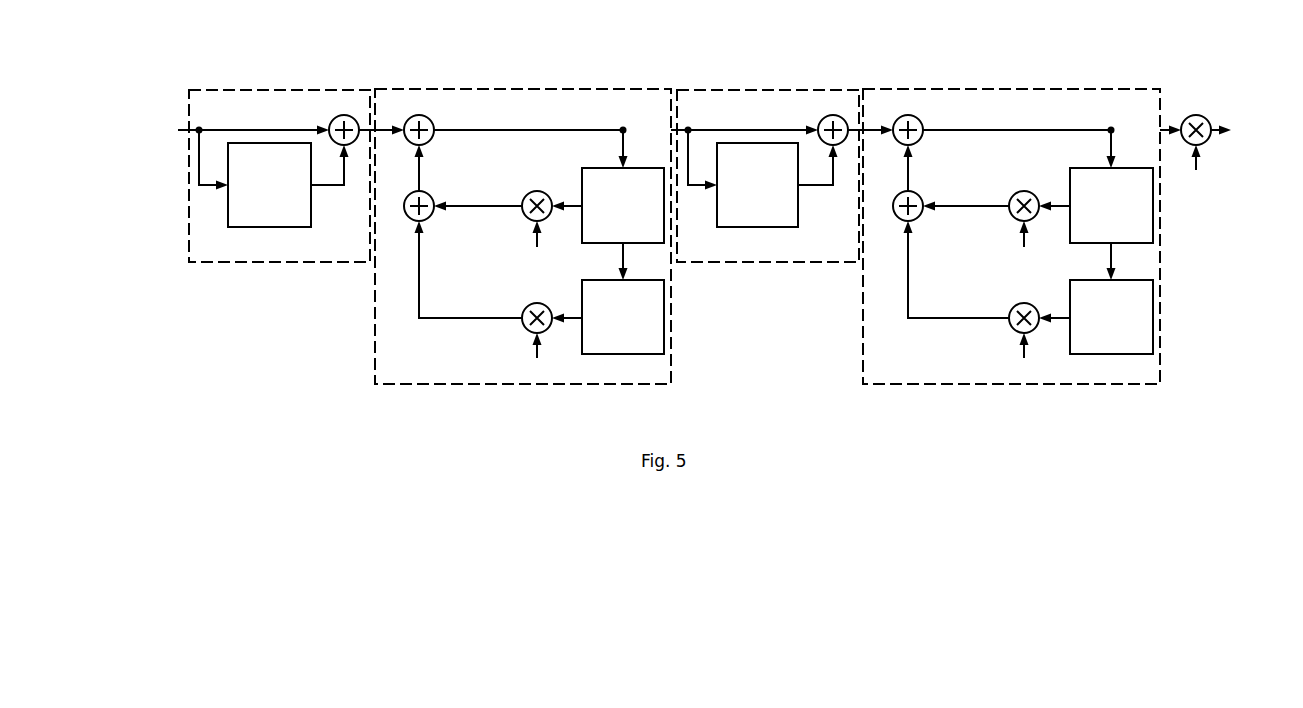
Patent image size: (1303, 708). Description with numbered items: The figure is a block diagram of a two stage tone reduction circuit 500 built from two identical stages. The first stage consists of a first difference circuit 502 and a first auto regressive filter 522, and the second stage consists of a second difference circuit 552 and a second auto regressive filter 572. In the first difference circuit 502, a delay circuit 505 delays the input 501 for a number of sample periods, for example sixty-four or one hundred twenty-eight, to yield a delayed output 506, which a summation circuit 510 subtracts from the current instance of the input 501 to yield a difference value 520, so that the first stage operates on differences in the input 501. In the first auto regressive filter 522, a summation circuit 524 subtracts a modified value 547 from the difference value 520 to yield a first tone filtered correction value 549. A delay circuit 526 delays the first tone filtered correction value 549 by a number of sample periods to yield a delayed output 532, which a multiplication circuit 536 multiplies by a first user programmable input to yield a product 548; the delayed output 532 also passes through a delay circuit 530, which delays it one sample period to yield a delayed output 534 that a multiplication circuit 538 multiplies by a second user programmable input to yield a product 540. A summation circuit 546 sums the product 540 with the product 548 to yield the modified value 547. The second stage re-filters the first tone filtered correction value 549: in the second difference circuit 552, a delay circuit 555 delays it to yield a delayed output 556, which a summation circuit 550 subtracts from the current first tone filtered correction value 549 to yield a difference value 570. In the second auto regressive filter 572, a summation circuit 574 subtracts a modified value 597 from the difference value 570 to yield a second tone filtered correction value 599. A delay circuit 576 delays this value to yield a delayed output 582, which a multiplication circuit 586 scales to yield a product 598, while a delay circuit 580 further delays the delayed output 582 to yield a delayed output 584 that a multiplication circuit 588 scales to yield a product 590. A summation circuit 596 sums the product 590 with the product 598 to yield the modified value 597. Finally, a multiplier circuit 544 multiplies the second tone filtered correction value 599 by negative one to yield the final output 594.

The two stage tone reduction circuit 500 is at (356, 59).
The input 501 is at (153, 120).
The first difference circuit 502 is at (230, 252).
The delay circuit 505 is at (286, 221).
The delayed output 506 is at (332, 187).
The summation circuit 510 is at (330, 121).
The difference value 520 is at (387, 125).
The first auto regressive filter 522 is at (418, 374).
The summation circuit 524 is at (431, 118).
The delay circuit 526 is at (639, 243).
The delay circuit 530 is at (639, 354).
The delayed output 532 is at (575, 205).
The delayed output 534 is at (574, 317).
The multiplication circuit 536 is at (530, 195).
The multiplication circuit 538 is at (528, 306).
The product 540 is at (481, 316).
The multiplier circuit 544 is at (1194, 118).
The summation circuit 546 is at (430, 216).
The modified value 547 is at (421, 171).
The product 548 is at (482, 204).
The first tone filtered correction value 549 is at (489, 133).
The summation circuit 550 is at (819, 121).
The second difference circuit 552 is at (719, 252).
The delay circuit 555 is at (775, 221).
The delayed output 556 is at (822, 187).
The difference value 570 is at (875, 125).
The second auto regressive filter 572 is at (906, 374).
The summation circuit 574 is at (919, 118).
The delay circuit 576 is at (1127, 243).
The delay circuit 580 is at (1127, 354).
The delayed output 582 is at (1062, 205).
The delayed output 584 is at (1061, 317).
The multiplication circuit 586 is at (1017, 195).
The multiplication circuit 588 is at (1015, 306).
The product 590 is at (969, 316).
The final output 594 is at (1252, 120).
The summation circuit 596 is at (918, 216).
The modified value 597 is at (909, 171).
The product 598 is at (970, 204).
The second tone filtered correction value 599 is at (977, 133).